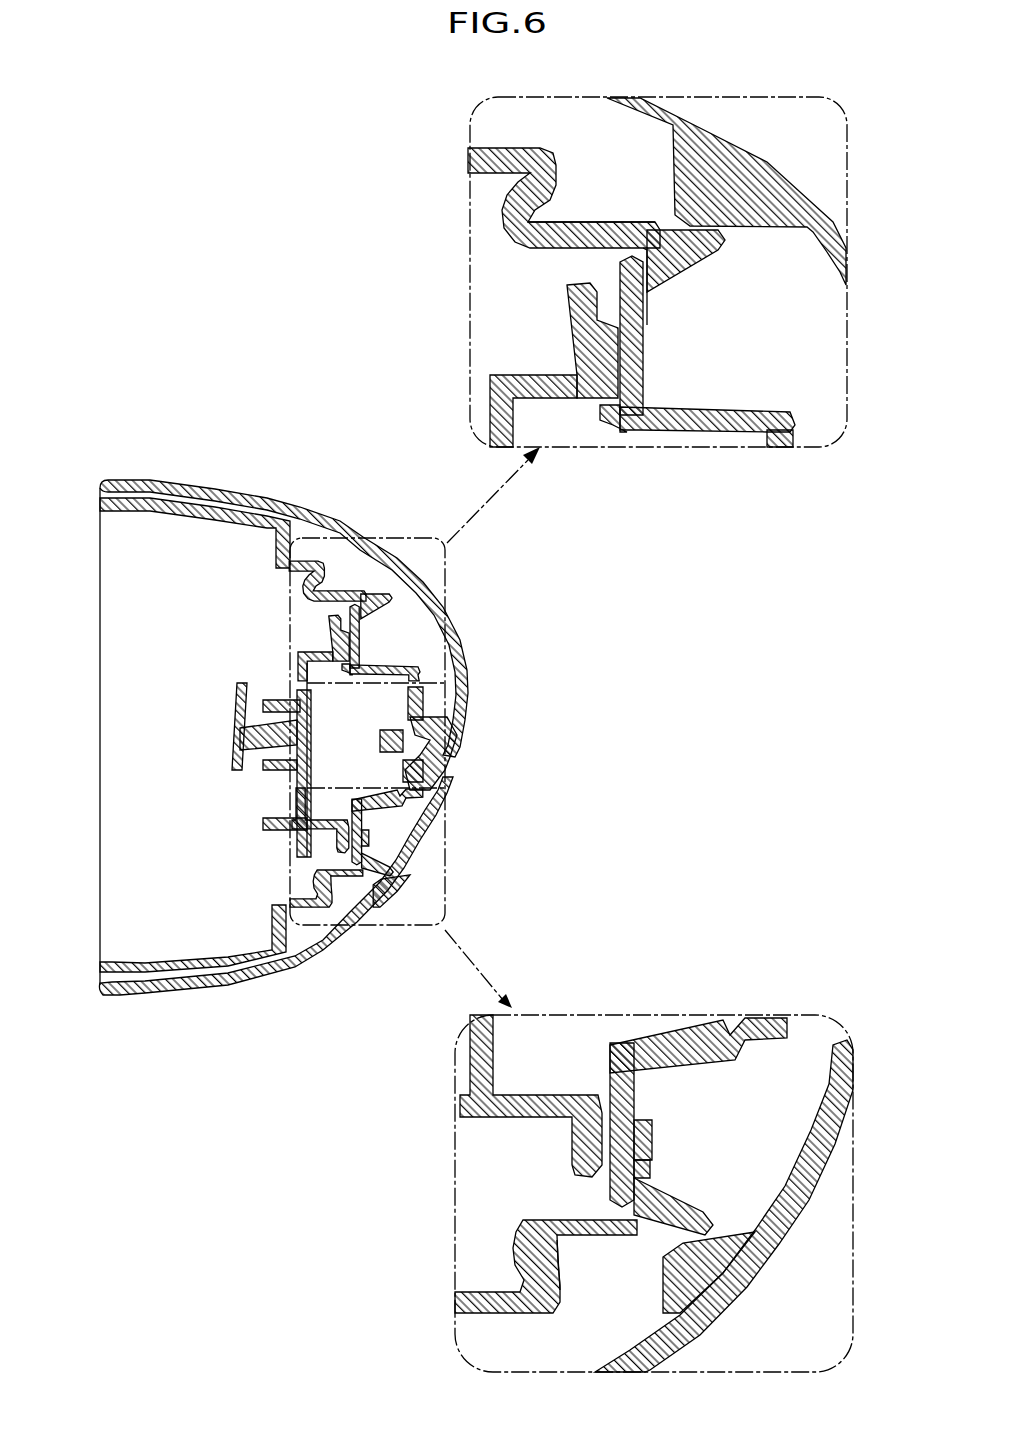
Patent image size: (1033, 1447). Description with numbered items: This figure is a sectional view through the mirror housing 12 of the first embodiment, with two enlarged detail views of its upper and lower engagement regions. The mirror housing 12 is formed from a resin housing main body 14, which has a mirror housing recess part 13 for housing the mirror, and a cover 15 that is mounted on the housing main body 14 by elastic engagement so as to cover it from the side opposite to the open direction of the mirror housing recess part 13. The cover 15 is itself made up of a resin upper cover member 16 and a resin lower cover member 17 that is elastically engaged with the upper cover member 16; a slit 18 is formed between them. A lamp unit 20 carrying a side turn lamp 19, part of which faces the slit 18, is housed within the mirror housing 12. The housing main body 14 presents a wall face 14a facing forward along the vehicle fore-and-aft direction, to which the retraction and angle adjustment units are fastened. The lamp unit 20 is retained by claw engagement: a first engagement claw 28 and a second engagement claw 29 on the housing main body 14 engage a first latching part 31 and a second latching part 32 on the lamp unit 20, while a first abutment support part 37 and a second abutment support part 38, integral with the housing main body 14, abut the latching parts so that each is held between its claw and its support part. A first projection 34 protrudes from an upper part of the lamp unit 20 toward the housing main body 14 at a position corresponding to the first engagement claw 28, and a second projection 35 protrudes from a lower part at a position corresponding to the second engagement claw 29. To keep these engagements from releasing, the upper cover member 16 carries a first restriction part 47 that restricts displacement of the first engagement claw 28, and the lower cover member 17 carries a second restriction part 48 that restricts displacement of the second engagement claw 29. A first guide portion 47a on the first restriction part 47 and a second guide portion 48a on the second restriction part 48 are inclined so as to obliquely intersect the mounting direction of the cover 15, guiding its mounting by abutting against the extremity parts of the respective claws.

The mirror housing 12 is at (228, 990).
The mirror housing recess part 13 is at (135, 503).
The housing main body 14 is at (182, 972).
The wall face 14a is at (515, 415).
The cover 15 is at (335, 958).
The upper cover member 16 is at (767, 163).
The lower cover member 17 is at (718, 1287).
The slit 18 is at (452, 745).
The side turn lamp 19 is at (450, 757).
The lamp unit 20 is at (735, 405).
The first engagement claw 28 is at (690, 260).
The second engagement claw 29 is at (675, 1200).
The first latching part 31 is at (646, 316).
The second latching part 32 is at (640, 1165).
The first projection 34 is at (710, 432).
The second projection 35 is at (662, 1043).
The first abutment support part 37 is at (643, 363).
The second abutment support part 38 is at (645, 1125).
The first restriction part 47 is at (673, 165).
The first guide portion 47a is at (665, 216).
The second restriction part 48 is at (662, 1280).
The second guide portion 48a is at (664, 1250).